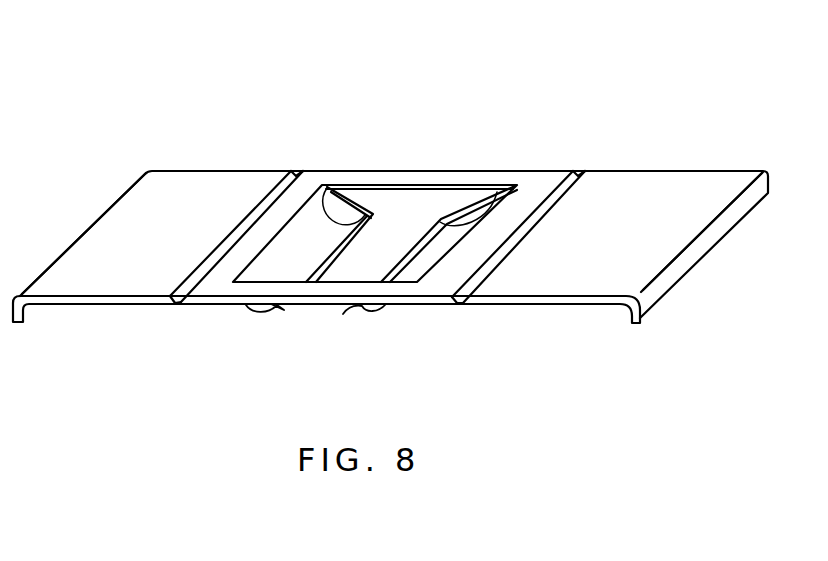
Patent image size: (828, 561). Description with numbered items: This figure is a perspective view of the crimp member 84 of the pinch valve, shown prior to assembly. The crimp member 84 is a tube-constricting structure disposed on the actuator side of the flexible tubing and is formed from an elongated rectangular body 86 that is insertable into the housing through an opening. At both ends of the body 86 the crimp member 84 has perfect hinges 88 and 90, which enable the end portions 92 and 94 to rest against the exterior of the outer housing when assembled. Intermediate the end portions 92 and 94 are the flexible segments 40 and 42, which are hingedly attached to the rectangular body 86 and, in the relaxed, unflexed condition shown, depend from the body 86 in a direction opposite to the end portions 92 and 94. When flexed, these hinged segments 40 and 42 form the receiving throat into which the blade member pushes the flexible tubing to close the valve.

The crimp member 84 is at (156, 136).
The elongated rectangular body 86 is at (417, 305).
The perfect hinge 88 is at (303, 168).
The perfect hinge 90 is at (584, 168).
The end portion 92 is at (163, 243).
The end portion 94 is at (625, 250).
The flexible segment 40 is at (329, 236).
The flexible segment 42 is at (452, 238).